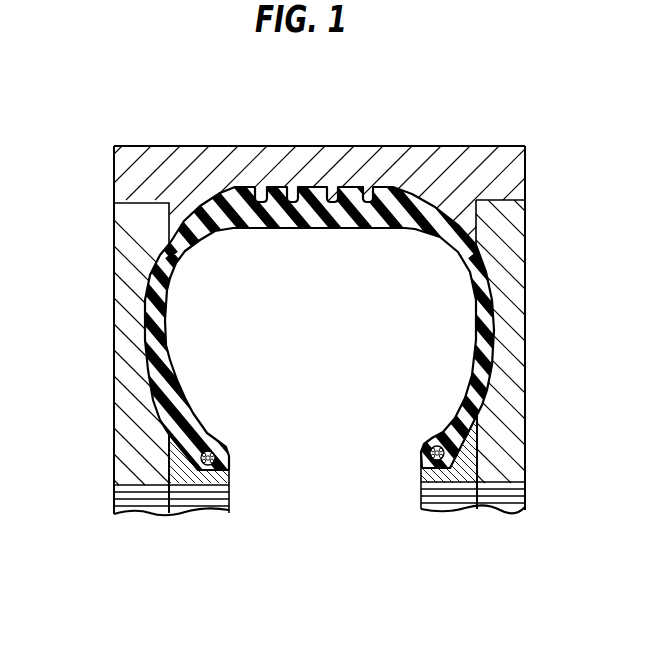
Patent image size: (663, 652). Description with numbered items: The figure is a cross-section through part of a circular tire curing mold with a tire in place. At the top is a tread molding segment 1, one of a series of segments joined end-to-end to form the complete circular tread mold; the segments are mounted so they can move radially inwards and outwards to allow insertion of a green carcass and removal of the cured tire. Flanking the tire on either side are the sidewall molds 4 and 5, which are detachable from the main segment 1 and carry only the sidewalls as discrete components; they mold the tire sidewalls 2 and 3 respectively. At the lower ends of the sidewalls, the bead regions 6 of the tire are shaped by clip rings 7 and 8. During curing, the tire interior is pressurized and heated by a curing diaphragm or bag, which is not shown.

The tread molding segment 1 is at (513, 177).
The sidewall 2 is at (150, 320).
The sidewall 3 is at (490, 328).
The sidewall mold 4 is at (125, 290).
The sidewall mold 5 is at (515, 325).
The bead region 6 is at (213, 449).
The clip ring 7 is at (230, 480).
The clip ring 8 is at (420, 482).